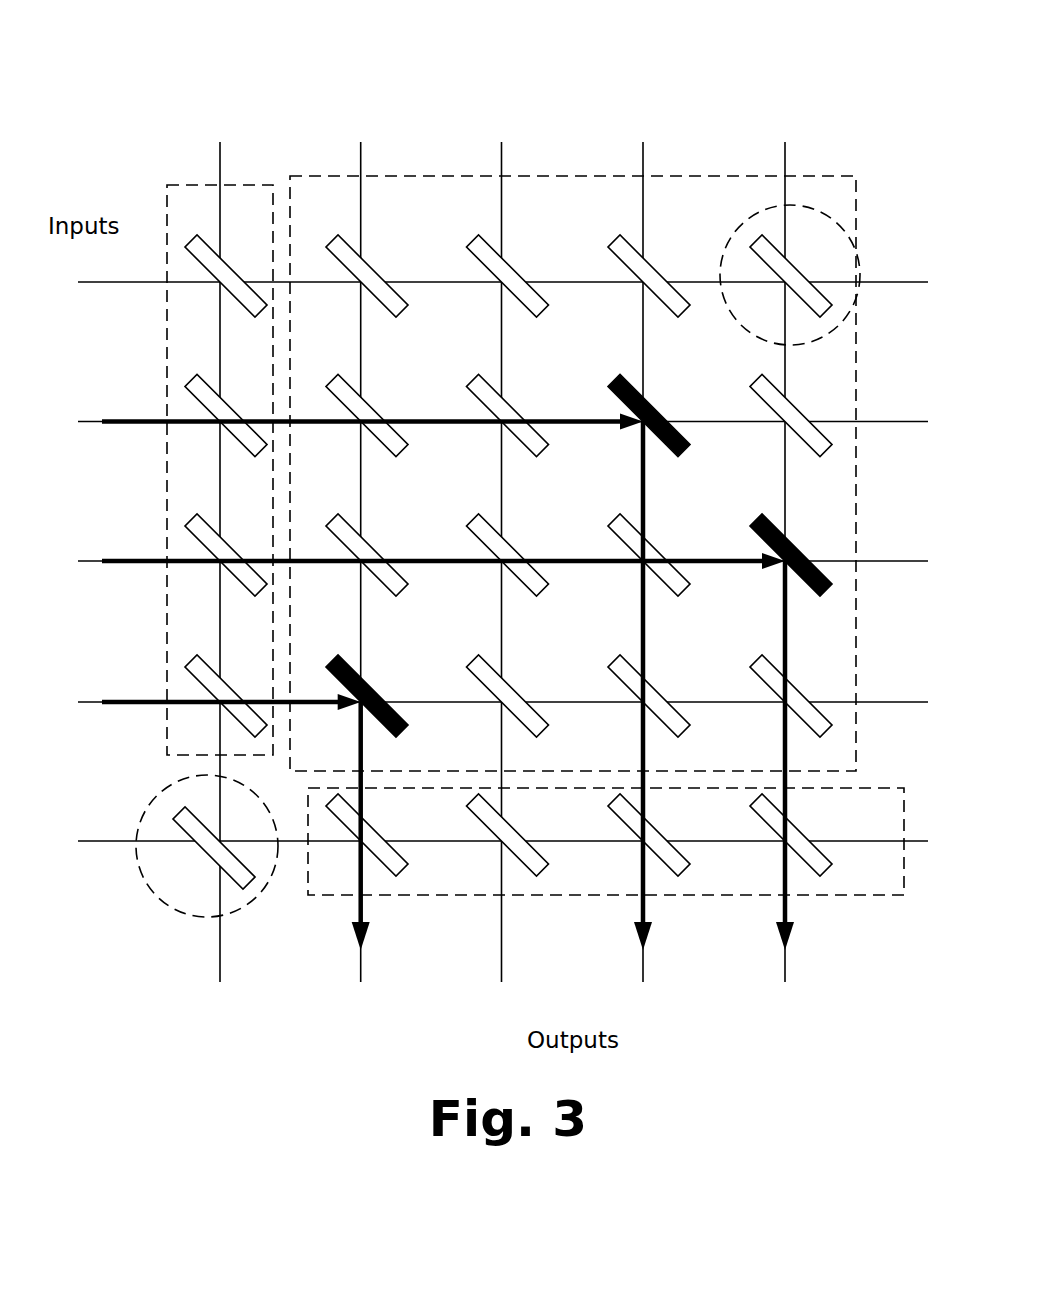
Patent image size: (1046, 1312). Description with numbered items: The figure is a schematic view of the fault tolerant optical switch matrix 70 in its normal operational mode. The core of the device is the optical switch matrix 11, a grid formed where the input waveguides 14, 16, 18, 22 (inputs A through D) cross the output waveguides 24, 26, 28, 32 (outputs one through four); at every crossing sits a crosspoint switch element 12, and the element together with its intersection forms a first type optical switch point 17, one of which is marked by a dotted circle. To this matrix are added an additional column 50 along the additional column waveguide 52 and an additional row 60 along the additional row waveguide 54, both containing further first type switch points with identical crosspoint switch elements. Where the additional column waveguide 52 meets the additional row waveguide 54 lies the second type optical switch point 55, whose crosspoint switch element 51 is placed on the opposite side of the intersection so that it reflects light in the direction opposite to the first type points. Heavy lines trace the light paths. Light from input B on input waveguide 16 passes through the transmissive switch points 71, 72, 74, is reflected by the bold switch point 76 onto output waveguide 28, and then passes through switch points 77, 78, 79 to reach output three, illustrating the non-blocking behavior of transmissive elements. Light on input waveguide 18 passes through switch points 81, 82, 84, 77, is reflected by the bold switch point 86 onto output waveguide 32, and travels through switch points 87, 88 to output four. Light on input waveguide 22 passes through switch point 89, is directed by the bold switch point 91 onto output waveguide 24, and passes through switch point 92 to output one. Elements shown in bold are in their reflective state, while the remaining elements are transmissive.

The fault tolerant optical switch matrix 70 is at (258, 29).
The optical switch matrix 11 is at (339, 102).
The additional column 50 is at (239, 212).
The additional row 60 is at (868, 815).
The crosspoint switch element 12 is at (470, 240).
The first type optical switch point 17 is at (846, 200).
The input waveguide 14 is at (118, 283).
The input waveguide 16 is at (100, 423).
The input waveguide 18 is at (100, 562).
The input waveguide 22 is at (100, 703).
The additional column waveguide 52 is at (220, 325).
The additional row waveguide 54 is at (290, 843).
The second type optical switch point 55 is at (132, 790).
The crosspoint switch element 51 is at (207, 855).
The first type optical switch point 71 is at (223, 428).
The first type optical switch point 72 is at (364, 428).
The first type optical switch point 74 is at (505, 428).
The first type optical switch point 76 is at (646, 428).
The first type switch point 81 is at (223, 568).
The first type switch point 82 is at (364, 568).
The first type switch point 84 is at (505, 568).
The first type optical switch point 77 is at (646, 568).
The first type optical switch point 86 is at (788, 568).
The first type optical switch point 89 is at (223, 709).
The first type optical switch point 91 is at (364, 709).
The first type optical switch point 78 is at (646, 709).
The first type optical switch point 87 is at (788, 709).
The first type optical switch point 92 is at (364, 848).
The first type optical switch point 79 is at (646, 848).
The first type optical switch point 88 is at (788, 848).
The output waveguide 24 is at (359, 965).
The output waveguide 26 is at (500, 955).
The output waveguide 28 is at (642, 968).
The output waveguide 32 is at (784, 968).